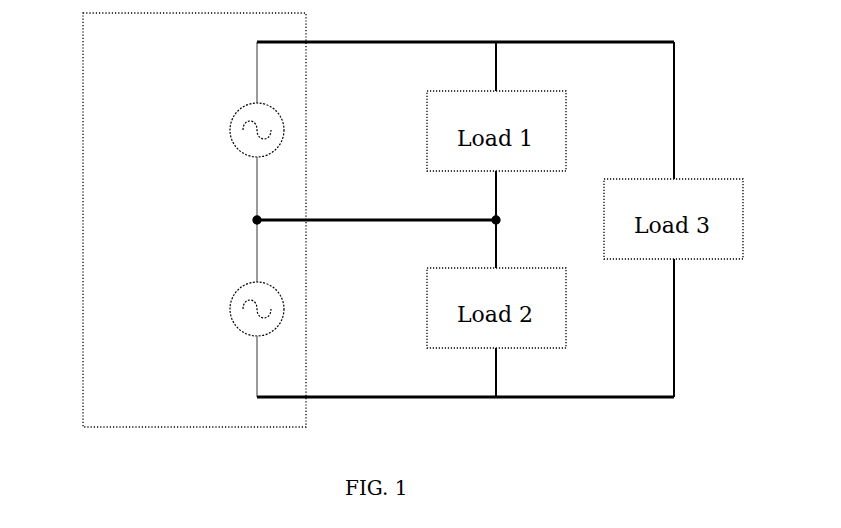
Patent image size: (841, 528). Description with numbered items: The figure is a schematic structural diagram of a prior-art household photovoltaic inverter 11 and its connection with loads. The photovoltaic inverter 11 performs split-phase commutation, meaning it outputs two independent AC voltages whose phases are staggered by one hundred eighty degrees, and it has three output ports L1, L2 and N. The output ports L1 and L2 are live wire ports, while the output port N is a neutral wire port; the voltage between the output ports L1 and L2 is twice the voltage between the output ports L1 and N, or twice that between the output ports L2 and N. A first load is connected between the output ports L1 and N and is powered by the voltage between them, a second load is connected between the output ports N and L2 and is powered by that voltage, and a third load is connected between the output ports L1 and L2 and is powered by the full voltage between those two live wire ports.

The photovoltaic inverter 11 is at (83, 172).
The output port L1 is at (465, 21).
The output port L2 is at (465, 417).
The output port N is at (389, 222).